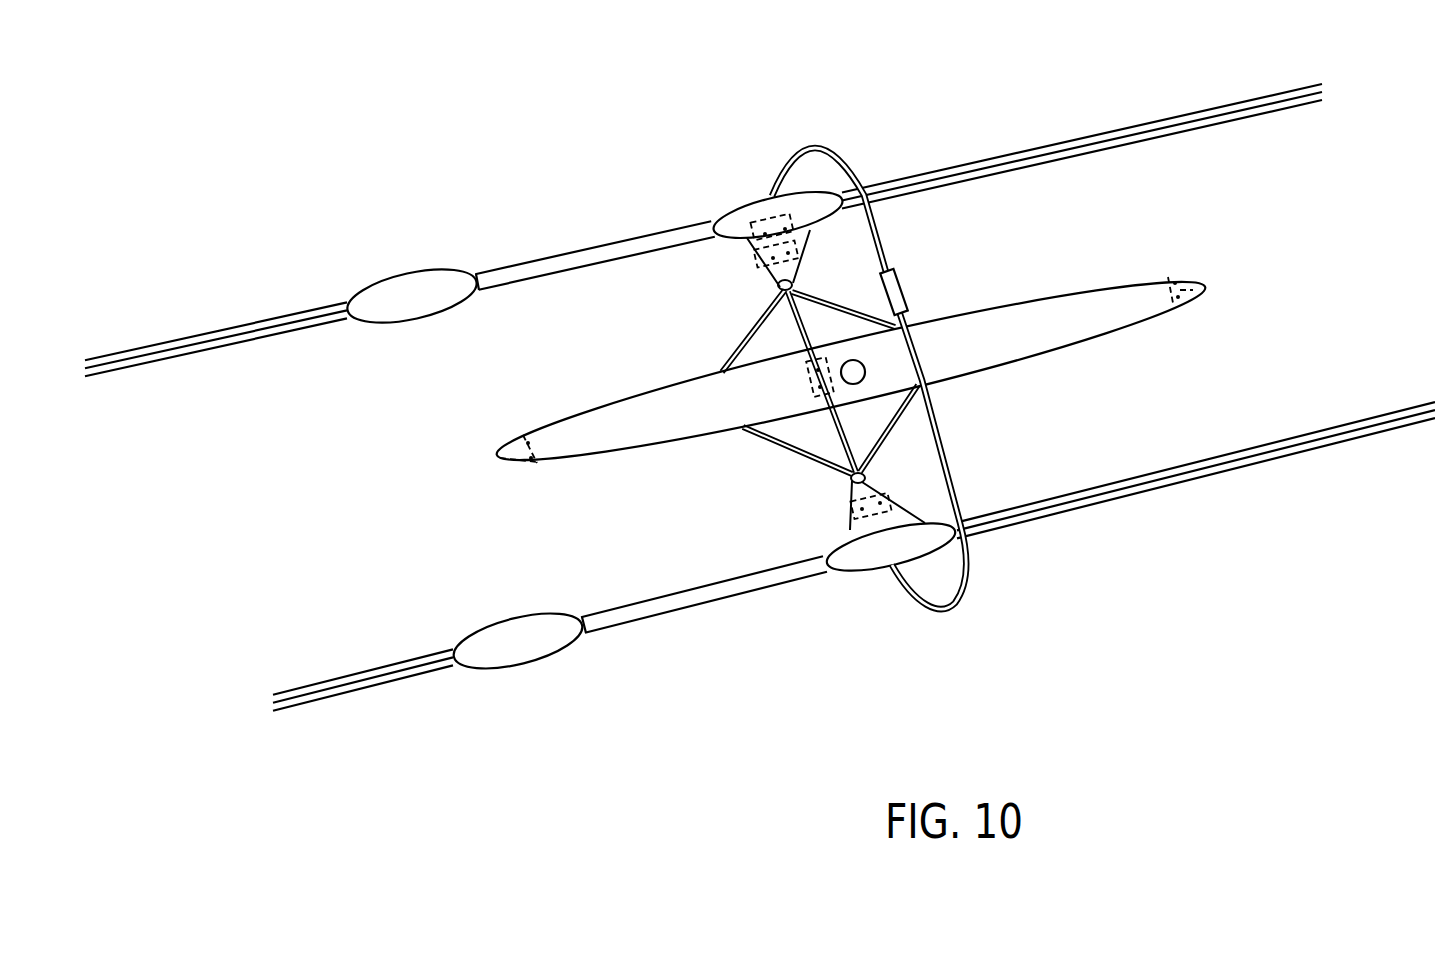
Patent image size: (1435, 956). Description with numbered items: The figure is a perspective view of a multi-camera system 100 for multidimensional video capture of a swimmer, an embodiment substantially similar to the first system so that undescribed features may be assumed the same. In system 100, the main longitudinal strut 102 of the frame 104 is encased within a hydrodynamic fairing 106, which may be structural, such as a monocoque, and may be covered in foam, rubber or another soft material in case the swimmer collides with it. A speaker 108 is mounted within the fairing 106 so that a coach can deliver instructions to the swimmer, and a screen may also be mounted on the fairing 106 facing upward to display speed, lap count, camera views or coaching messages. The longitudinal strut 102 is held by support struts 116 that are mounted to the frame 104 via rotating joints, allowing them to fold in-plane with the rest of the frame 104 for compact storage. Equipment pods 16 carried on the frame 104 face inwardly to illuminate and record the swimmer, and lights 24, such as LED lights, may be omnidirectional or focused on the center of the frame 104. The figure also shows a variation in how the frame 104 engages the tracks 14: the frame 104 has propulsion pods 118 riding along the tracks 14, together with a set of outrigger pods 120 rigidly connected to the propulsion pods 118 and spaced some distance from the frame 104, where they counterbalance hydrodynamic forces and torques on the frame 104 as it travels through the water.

The system 100 is at (550, 112).
The tracks 14 is at (312, 318).
The equipment pods 16 is at (775, 218).
The lights 24 is at (777, 288).
The main longitudinal strut 102 is at (586, 404).
The frame 104 is at (945, 460).
The hydrodynamic fairing 106 is at (592, 455).
The speaker 108 is at (850, 384).
The support struts 116 is at (824, 305).
The propulsion pods 118 is at (735, 213).
The outrigger pods 120 is at (428, 282).